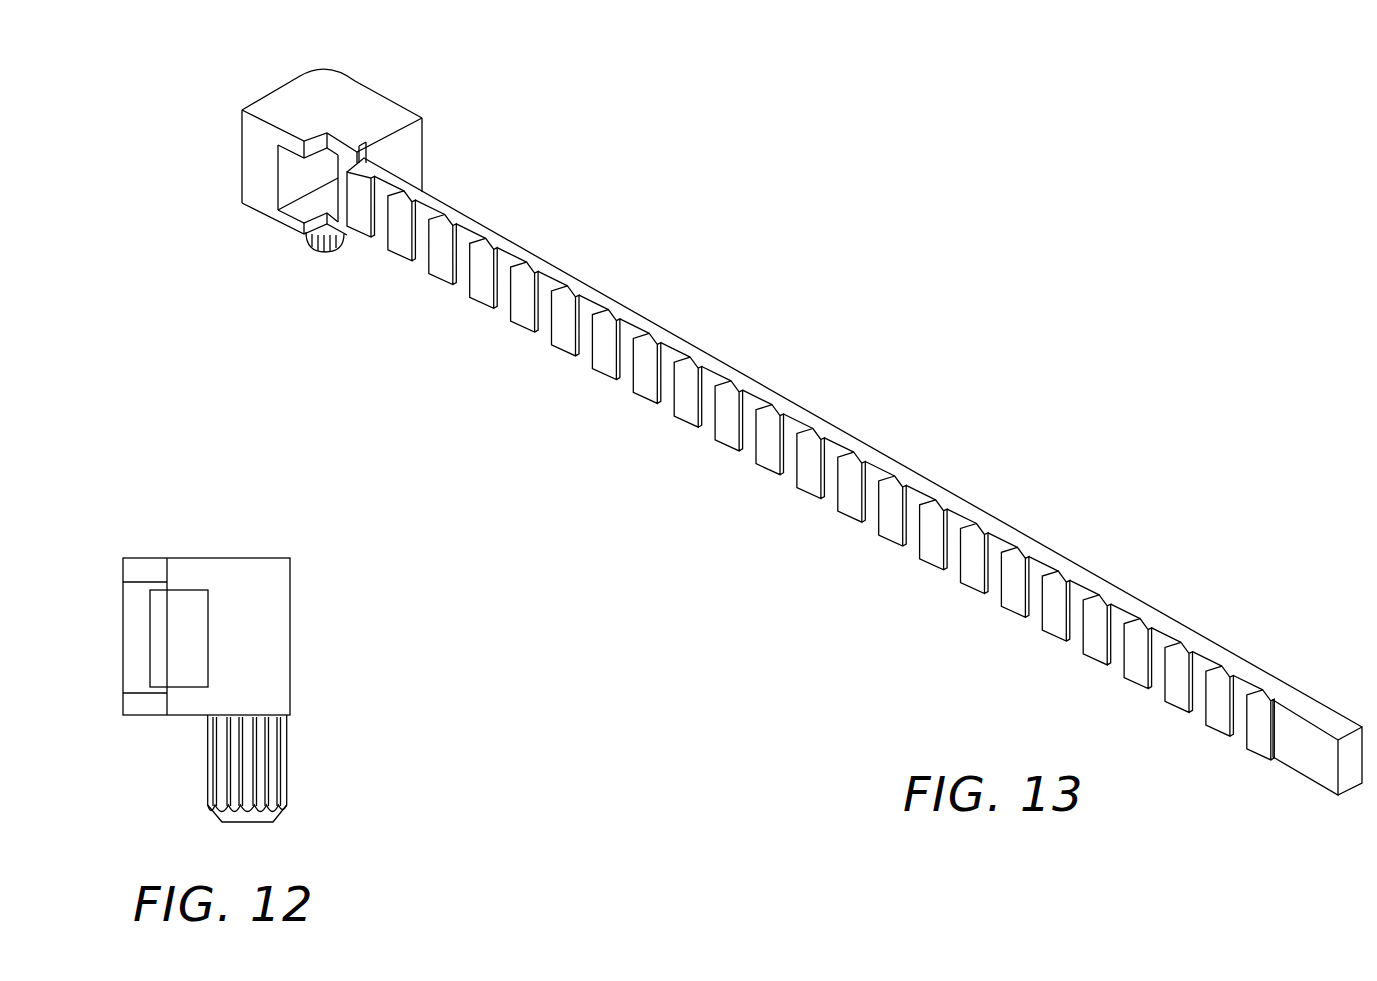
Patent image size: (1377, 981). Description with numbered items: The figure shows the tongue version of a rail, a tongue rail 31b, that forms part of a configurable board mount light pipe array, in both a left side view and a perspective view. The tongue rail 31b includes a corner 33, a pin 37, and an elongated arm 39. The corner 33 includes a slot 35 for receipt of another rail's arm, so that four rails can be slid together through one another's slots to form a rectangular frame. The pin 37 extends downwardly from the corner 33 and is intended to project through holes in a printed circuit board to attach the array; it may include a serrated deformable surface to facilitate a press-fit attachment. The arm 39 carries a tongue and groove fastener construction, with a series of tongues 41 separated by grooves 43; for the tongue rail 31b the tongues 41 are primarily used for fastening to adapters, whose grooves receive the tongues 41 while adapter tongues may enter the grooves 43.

In FIG. 13, the tongue rail 31b is at (891, 358).
In FIG. 13, the corner 33 is at (365, 102).
In FIG. 12, the corner 33 is at (263, 632).
In FIG. 13, the slot 35 is at (291, 180).
In FIG. 12, the slot 35 is at (185, 603).
In FIG. 13, the pin 37 is at (327, 250).
In FIG. 12, the pin 37 is at (270, 757).
In FIG. 13, the arm 39 is at (963, 510).
In FIG. 13, the tongue 41 is at (605, 357).
In FIG. 13, the groove 43 is at (500, 303).